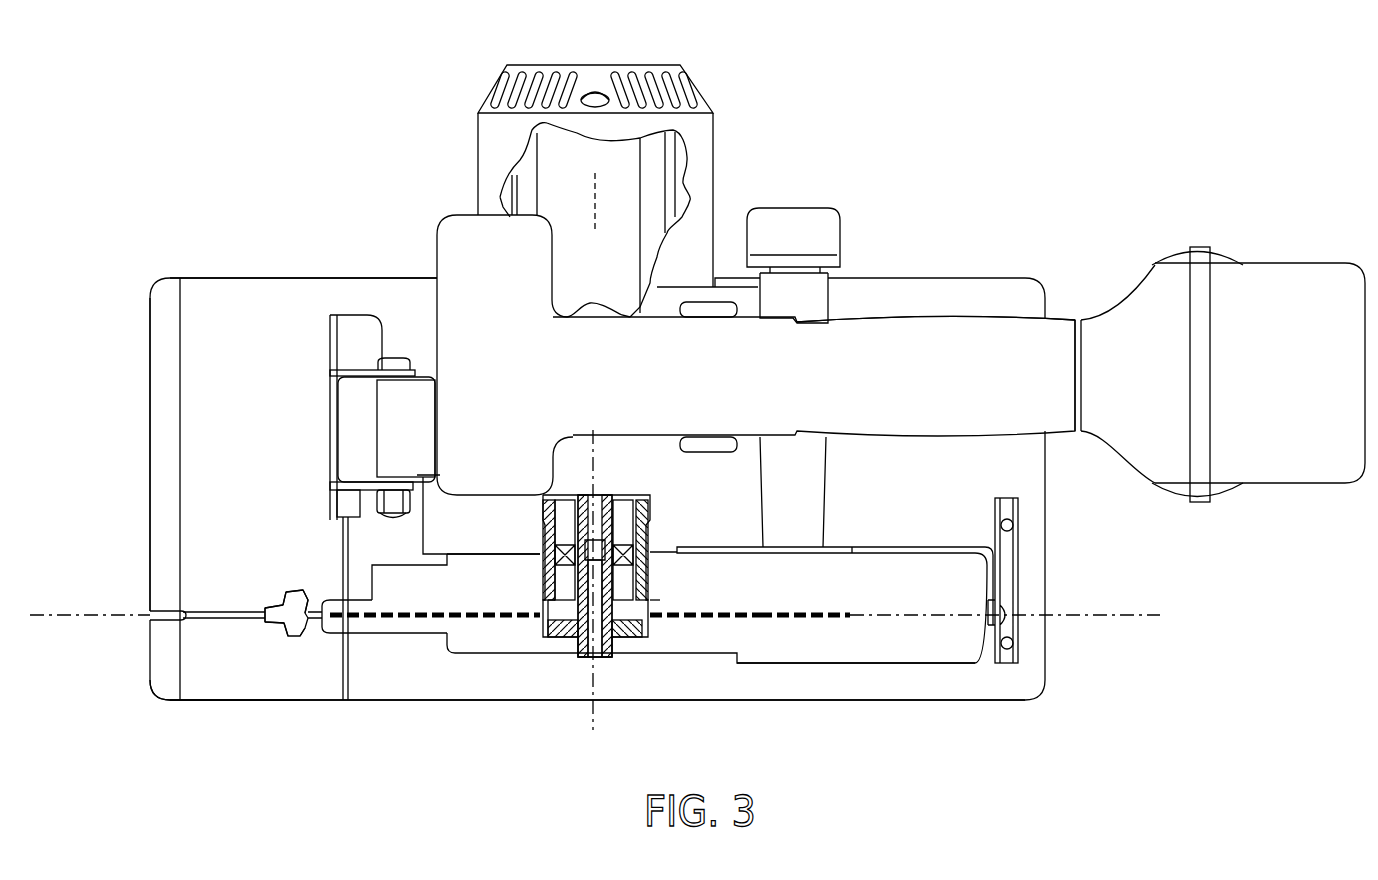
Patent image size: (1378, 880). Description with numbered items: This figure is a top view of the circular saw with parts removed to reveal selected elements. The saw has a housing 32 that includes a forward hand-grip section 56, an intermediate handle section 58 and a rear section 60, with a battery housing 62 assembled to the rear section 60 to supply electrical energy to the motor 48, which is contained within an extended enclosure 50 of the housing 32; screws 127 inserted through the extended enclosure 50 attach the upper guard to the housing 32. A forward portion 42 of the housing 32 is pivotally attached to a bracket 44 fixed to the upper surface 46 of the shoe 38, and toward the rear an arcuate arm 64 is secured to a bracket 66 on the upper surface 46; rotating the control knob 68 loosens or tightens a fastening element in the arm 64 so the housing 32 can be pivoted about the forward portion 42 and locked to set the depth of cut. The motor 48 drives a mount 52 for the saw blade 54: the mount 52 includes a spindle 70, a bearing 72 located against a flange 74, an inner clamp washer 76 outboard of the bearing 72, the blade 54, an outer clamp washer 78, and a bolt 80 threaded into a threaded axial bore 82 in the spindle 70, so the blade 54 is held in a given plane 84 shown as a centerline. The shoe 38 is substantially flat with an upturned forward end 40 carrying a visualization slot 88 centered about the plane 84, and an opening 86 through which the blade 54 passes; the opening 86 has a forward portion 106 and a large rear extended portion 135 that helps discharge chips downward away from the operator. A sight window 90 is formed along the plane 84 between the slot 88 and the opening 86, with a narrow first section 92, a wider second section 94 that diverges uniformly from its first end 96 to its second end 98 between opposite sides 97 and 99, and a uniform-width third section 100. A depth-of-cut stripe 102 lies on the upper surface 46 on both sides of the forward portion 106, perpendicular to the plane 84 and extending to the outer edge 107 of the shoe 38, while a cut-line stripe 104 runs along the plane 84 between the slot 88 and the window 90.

The housing 32 is at (990, 314).
The shoe 38 is at (843, 702).
The forward end 40 is at (152, 332).
The forward portion 42 is at (393, 405).
The bracket 44 is at (333, 390).
The upper surface 46 is at (310, 277).
The motor 48 is at (560, 173).
The extended enclosure 50 is at (485, 130).
The mount 52 is at (561, 636).
The saw blade 54 is at (688, 622).
The forward hand-grip section 56 is at (455, 242).
The intermediate handle section 58 is at (892, 343).
The rear section 60 is at (1143, 303).
The battery housing 62 is at (1302, 282).
The arcuate arm 64 is at (980, 547).
The bracket 66 is at (1018, 553).
The control knob 68 is at (788, 212).
The spindle 70 is at (626, 593).
The bearing 72 is at (640, 540).
The flange 74 is at (628, 495).
The inner clamp washer 76 is at (645, 600).
The outer clamp washer 78 is at (633, 637).
The bolt 80 is at (600, 657).
The threaded axial bore 82 is at (650, 612).
The plane 84 is at (1100, 620).
The opening 86 is at (776, 663).
The visualization slot 88 is at (150, 612).
The sight window 90 is at (290, 640).
The first section 92 is at (268, 612).
The second section 94 is at (272, 620).
The first end 96 is at (280, 600).
The side 97 is at (277, 633).
The second end 98 is at (302, 632).
The side 99 is at (295, 594).
The third section 100 is at (304, 610).
The depth-of-cut stripe 102 is at (343, 530).
The cut-line stripe 104 is at (205, 620).
The forward portion 106 is at (392, 632).
The outer edge 107 is at (263, 703).
The screws 127 is at (612, 92).
The rear extended portion 135 is at (960, 662).